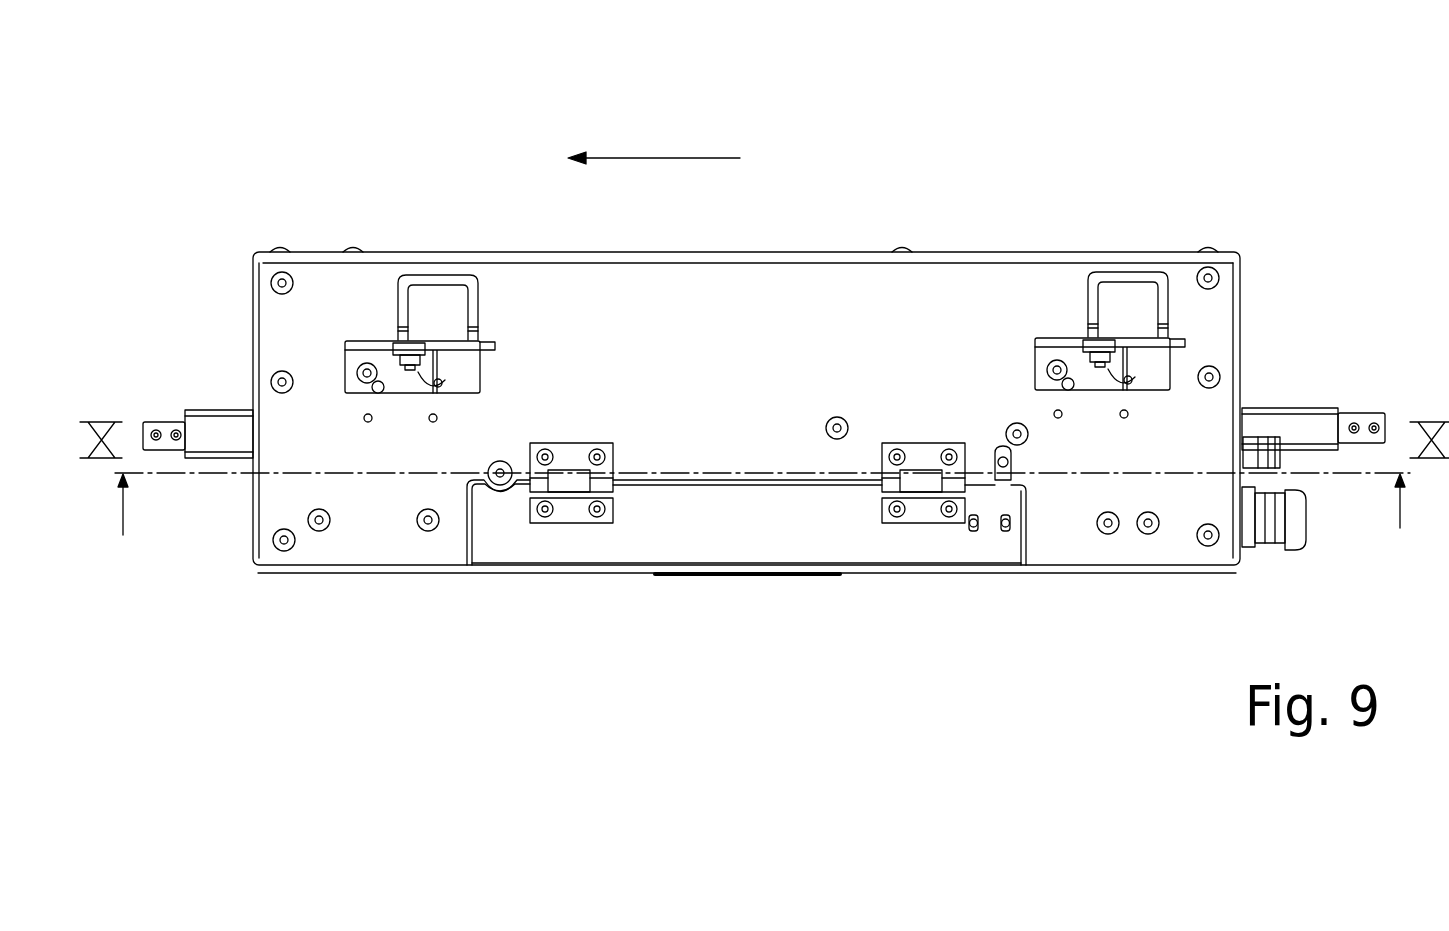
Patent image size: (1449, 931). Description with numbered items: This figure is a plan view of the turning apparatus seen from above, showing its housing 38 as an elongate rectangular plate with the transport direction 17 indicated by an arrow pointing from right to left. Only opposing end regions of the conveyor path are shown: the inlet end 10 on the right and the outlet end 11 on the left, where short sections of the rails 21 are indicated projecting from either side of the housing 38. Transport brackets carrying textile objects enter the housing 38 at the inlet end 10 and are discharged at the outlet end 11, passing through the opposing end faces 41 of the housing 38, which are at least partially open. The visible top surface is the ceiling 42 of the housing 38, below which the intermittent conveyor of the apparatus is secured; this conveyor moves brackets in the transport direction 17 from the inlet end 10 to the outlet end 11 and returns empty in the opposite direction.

The inlet end 10 is at (1307, 390).
The outlet end 11 is at (227, 425).
The transport direction 17 is at (663, 158).
The rails 21 is at (167, 428).
The housing 38 is at (430, 642).
The end faces 41 is at (1238, 297).
The ceiling 42 is at (933, 273).